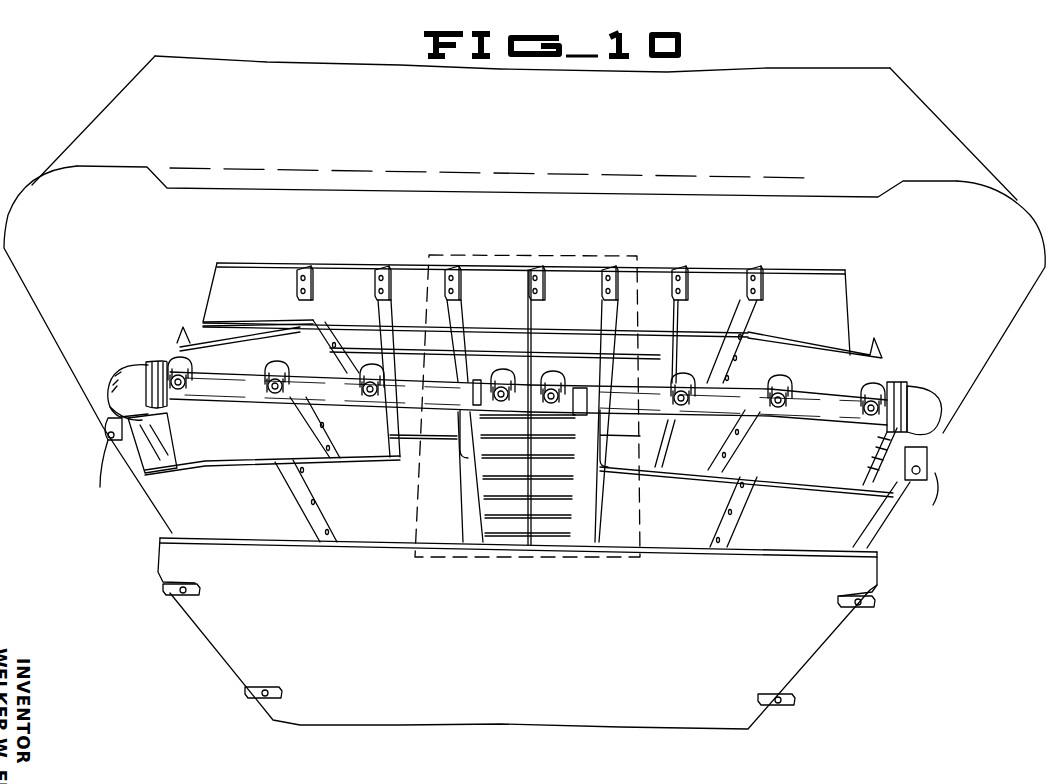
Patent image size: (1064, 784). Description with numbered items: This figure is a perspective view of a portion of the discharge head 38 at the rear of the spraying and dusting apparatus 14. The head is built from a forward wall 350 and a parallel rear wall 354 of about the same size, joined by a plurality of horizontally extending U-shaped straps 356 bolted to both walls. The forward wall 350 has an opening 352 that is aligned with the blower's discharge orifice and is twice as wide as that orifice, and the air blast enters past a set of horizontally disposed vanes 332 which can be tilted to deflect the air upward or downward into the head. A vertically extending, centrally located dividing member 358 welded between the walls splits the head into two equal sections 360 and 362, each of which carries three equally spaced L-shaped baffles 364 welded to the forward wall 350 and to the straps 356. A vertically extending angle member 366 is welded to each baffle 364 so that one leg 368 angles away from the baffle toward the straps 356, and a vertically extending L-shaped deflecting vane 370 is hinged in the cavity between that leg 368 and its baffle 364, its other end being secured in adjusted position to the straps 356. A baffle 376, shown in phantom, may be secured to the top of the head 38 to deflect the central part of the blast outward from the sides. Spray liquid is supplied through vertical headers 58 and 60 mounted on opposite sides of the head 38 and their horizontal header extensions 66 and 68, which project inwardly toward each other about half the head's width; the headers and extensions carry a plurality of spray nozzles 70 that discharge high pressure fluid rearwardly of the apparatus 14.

The apparatus 14 is at (995, 120).
The discharge head 38 is at (850, 280).
The vertically extending header 58 is at (162, 440).
The vertically extending header 60 is at (880, 460).
The horizontal header extension 66 is at (243, 377).
The horizontal header extension 68 is at (820, 413).
The spray nozzles 70 is at (177, 358).
The vanes 332 is at (490, 525).
The forward wall 350 is at (227, 287).
The opening 352 is at (657, 298).
The rear wall 354 is at (517, 633).
The U-shaped straps 356 is at (260, 687).
The dividing member 358 is at (515, 297).
The section 360 is at (420, 300).
The section 362 is at (648, 297).
The L-shaped baffles 364 is at (313, 300).
The angle member 366 is at (333, 364).
The leg 368 is at (302, 353).
The L-shaped deflecting vane 370 is at (203, 343).
The baffle 376 is at (490, 257).